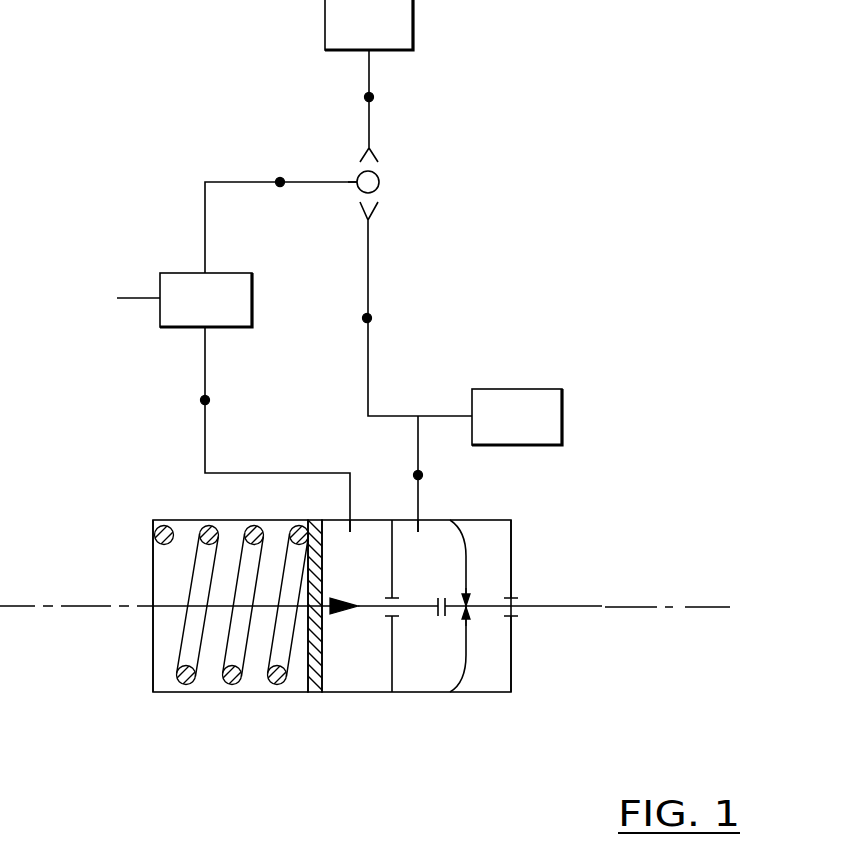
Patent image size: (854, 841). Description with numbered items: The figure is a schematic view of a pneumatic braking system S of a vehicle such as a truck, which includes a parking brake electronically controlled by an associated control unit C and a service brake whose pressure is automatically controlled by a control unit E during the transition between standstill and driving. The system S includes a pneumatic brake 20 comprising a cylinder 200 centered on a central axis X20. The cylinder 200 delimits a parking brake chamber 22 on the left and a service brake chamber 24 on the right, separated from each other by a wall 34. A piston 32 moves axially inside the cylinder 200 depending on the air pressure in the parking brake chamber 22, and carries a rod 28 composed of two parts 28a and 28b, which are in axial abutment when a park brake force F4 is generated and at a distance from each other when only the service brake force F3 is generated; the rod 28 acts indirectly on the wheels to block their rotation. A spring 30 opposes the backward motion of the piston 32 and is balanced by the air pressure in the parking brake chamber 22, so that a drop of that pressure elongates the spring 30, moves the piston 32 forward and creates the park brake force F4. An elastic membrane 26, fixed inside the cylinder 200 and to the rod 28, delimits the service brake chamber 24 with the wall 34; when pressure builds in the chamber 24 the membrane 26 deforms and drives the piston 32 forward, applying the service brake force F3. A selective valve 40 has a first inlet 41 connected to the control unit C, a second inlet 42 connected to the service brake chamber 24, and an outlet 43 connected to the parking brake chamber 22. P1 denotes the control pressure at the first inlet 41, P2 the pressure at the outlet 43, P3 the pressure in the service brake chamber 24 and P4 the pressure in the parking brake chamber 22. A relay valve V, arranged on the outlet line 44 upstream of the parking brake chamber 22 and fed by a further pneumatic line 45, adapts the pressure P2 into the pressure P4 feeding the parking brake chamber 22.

The pneumatic brake 20 is at (167, 711).
The parking brake chamber 22 is at (352, 677).
The service brake chamber 24 is at (426, 677).
The membrane 26 is at (466, 660).
The rod 28 is at (569, 607).
The first part of the rod 28a is at (372, 607).
The second part of the rod 28b is at (533, 610).
The spring 30 is at (178, 606).
The piston 32 is at (315, 682).
The wall 34 is at (390, 652).
The selective valve 40 is at (395, 181).
The first inlet 41 is at (369, 137).
The second inlet 42 is at (370, 222).
The outlet 43 is at (352, 185).
The outlet line 44 is at (205, 224).
The further pneumatic line 45 is at (134, 283).
The cylinder 200 is at (153, 632).
The pneumatic braking system S is at (160, 108).
The control unit C is at (369, 25).
The relay valve V is at (206, 300).
The control unit E is at (517, 417).
The control pressure P1 is at (369, 97).
The outlet pressure P2 is at (279, 178).
The service brake chamber pressure P3 is at (367, 318).
The parking brake chamber pressure P4 is at (203, 401).
The service brake force F3 is at (429, 572).
The park brake force F4 is at (287, 610).
The central axis X20 is at (383, 607).